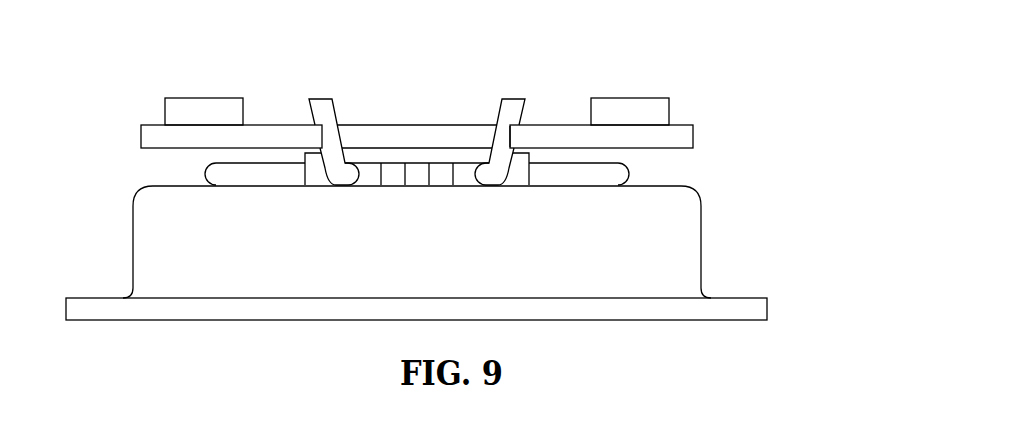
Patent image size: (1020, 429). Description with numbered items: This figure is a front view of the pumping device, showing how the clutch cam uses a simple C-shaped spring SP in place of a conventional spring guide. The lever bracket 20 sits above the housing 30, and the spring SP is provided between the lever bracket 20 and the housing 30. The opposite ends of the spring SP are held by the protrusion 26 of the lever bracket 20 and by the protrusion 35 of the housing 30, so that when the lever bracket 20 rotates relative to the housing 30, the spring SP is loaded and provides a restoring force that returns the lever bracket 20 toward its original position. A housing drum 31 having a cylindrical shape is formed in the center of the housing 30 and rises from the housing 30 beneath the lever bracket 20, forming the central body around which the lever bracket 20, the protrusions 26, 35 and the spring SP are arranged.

The lever bracket 20 is at (680, 137).
The protrusion of the lever bracket 26 is at (520, 137).
The housing 30 is at (757, 312).
The housing drum 31 is at (685, 247).
The protrusion of the housing 35 is at (522, 177).
The spring SP is at (513, 108).